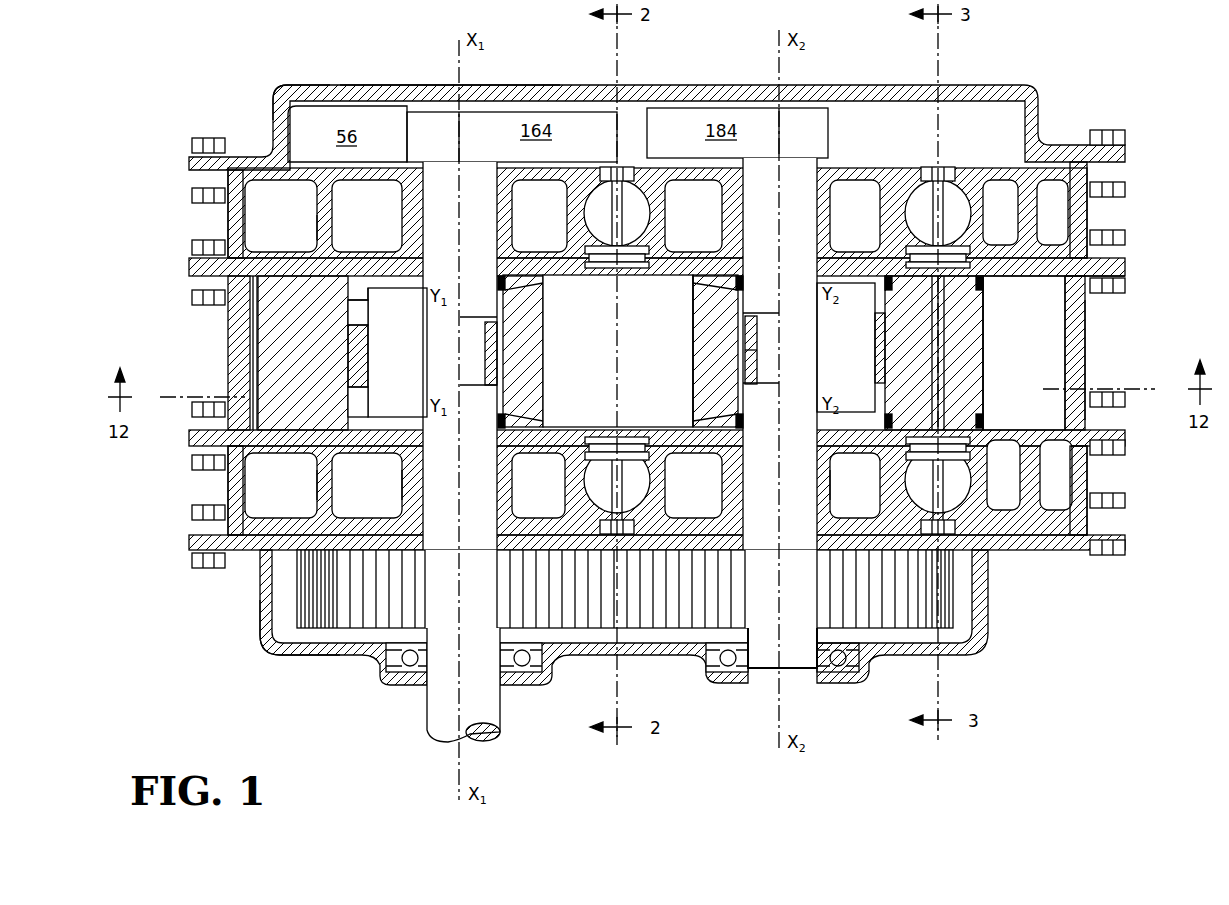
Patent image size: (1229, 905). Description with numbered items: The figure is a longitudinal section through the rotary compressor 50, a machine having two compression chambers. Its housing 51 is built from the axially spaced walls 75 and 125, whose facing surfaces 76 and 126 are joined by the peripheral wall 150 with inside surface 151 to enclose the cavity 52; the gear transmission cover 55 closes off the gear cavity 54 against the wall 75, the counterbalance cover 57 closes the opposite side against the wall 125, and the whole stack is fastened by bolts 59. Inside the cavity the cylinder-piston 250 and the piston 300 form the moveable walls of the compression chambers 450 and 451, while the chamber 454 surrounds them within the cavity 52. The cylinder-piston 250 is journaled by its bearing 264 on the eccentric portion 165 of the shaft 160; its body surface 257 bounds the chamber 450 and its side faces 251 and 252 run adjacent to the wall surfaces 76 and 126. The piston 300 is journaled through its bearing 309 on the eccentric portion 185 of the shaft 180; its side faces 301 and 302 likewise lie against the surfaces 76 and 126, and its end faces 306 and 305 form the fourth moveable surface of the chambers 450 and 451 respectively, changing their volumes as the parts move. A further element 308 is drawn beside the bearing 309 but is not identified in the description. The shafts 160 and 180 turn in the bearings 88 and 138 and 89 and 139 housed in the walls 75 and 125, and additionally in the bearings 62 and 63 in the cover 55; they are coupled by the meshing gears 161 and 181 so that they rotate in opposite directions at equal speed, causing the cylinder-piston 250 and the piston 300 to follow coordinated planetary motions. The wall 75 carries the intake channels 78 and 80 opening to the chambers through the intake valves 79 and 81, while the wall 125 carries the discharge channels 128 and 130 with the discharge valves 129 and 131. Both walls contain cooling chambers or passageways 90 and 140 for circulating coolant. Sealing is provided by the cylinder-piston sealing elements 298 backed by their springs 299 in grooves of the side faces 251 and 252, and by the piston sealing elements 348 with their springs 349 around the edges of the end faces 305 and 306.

The rotary compressor 50 is at (1030, 86).
The housing 51 is at (340, 86).
The counterbalance cover 57 is at (406, 88).
The bolts 59 is at (1110, 130).
The spaced wall 125 is at (235, 212).
The cooling chambers or passageways 140 is at (247, 206).
The side face of cylinder-piston 252 is at (302, 258).
The bearing 138 is at (424, 209).
The cylinder-piston sealing elements 298 is at (500, 275).
The springs 299 is at (506, 284).
The discharge channel 128 is at (600, 268).
The discharge valve 129 is at (628, 268).
The spaced side face of piston 302 is at (722, 256).
The sealing elements 348 is at (740, 275).
The springs 349 is at (735, 288).
The bearing 139 is at (744, 202).
The discharge channel 130 is at (940, 200).
The discharge valve 131 is at (928, 246).
The surface of spaced wall 126 is at (1080, 288).
The peripheral wall 150 is at (240, 317).
The chamber 454 is at (252, 349).
The cylinder-piston 250 is at (272, 362).
The bearing 264 is at (370, 318).
The surface of cylinder-piston body 257 is at (545, 338).
The compression chamber 450 is at (632, 358).
The end face of piston 306 is at (690, 326).
The ring 308 is at (758, 328).
The bearing 309 is at (758, 352).
The eccentric portion 185 is at (862, 348).
The piston 300 is at (716, 370).
The compression chamber 451 is at (950, 328).
The cavity 52 is at (1055, 328).
The inside surface of peripheral wall 151 is at (1078, 354).
The end face of piston 305 is at (950, 376).
The intake channel 78 is at (604, 460).
The intake valve 79 is at (630, 455).
The eccentric portion 165 is at (412, 355).
The spaced wall 75 is at (235, 470).
The side face of cylinder-piston 251 is at (308, 446).
The surface of spaced wall 76 is at (402, 446).
The bearing 88 is at (424, 470).
The bearing 89 is at (816, 470).
The cooling chambers or passageways 90 is at (248, 492).
The spaced side face of piston 301 is at (836, 446).
The intake valve 81 is at (930, 495).
The intake channel 80 is at (980, 555).
The gear 181 is at (920, 600).
The gear cavity 54 is at (284, 612).
The gear transmission cover 55 is at (276, 655).
The gear 161 is at (330, 615).
The bearing 62 is at (392, 668).
The shaft 160 is at (490, 697).
The shaft 180 is at (790, 655).
The bearing 63 is at (862, 668).